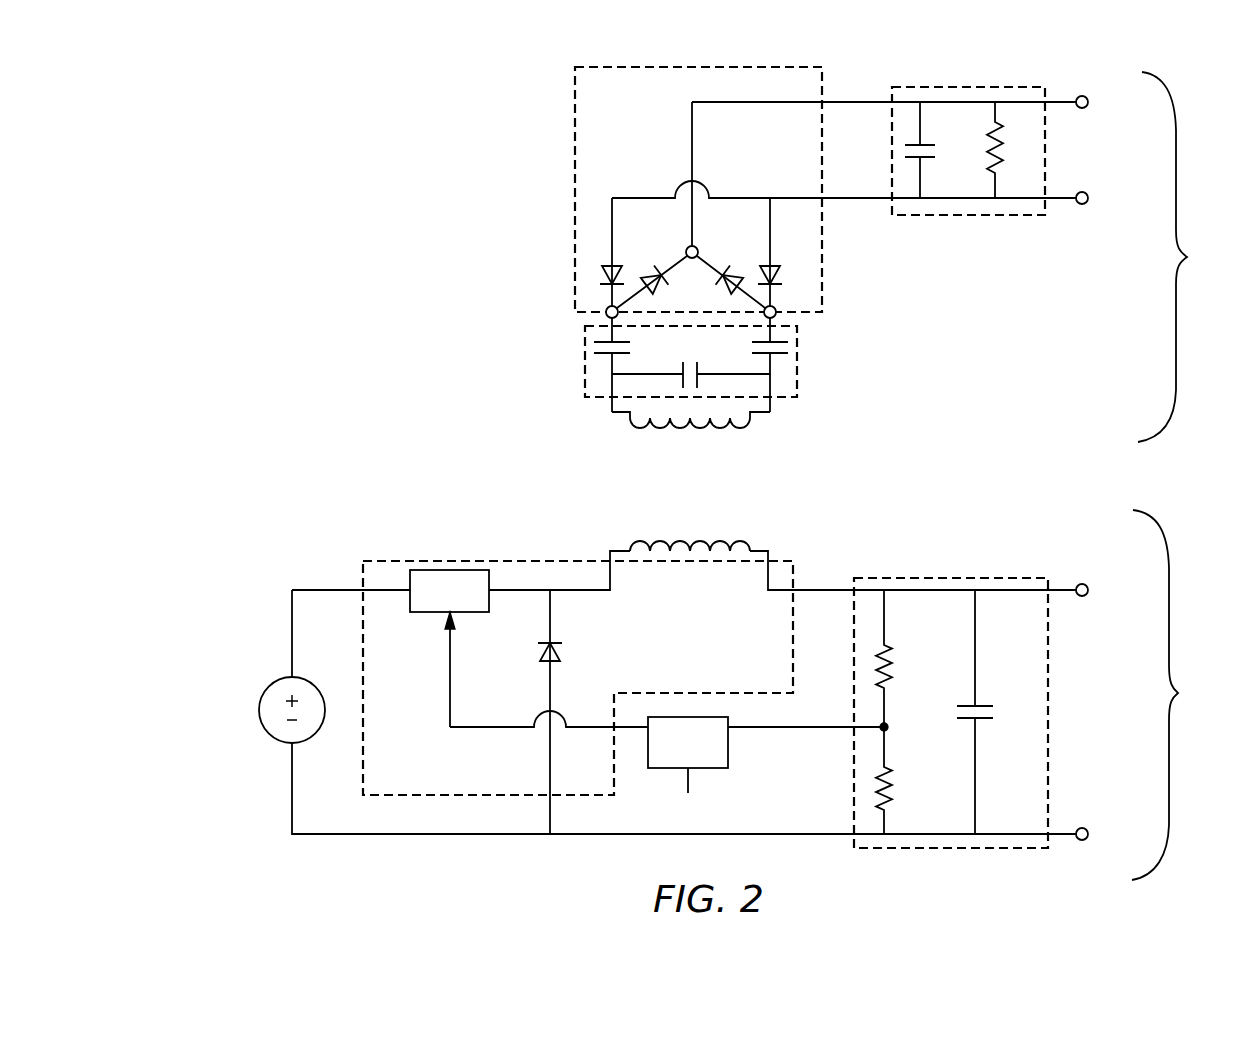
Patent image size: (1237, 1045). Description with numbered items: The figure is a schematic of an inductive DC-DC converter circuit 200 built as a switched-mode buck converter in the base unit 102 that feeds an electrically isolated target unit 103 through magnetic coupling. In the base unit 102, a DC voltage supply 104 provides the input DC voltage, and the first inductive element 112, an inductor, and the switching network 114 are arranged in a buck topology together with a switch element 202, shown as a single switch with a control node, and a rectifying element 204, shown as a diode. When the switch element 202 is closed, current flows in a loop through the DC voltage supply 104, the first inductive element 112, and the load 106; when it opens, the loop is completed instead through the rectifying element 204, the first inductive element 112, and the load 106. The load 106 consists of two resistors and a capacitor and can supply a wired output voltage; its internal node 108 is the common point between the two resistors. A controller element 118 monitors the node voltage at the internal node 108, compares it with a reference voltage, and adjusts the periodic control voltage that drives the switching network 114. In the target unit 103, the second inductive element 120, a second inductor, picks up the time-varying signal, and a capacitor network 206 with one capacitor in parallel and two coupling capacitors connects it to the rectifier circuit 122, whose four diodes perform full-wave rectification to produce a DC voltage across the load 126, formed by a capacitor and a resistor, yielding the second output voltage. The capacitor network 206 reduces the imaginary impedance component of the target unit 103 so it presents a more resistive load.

The base unit 102 is at (1150, 695).
The target unit 103 is at (1153, 257).
The DC voltage supply 104 is at (276, 681).
The load 106 is at (950, 849).
The internal node 108 is at (888, 732).
The first inductive element 112 is at (637, 547).
The switching network 114 is at (488, 795).
The controller element 118 is at (710, 769).
The second inductive element 120 is at (641, 428).
The rectifier circuit 122 is at (714, 67).
The load 126 is at (968, 87).
The inductive DC-DC converter circuit 200 is at (684, 808).
The switch element 202 is at (470, 614).
The rectifying element 204 is at (561, 644).
The capacitor network 206 is at (797, 357).